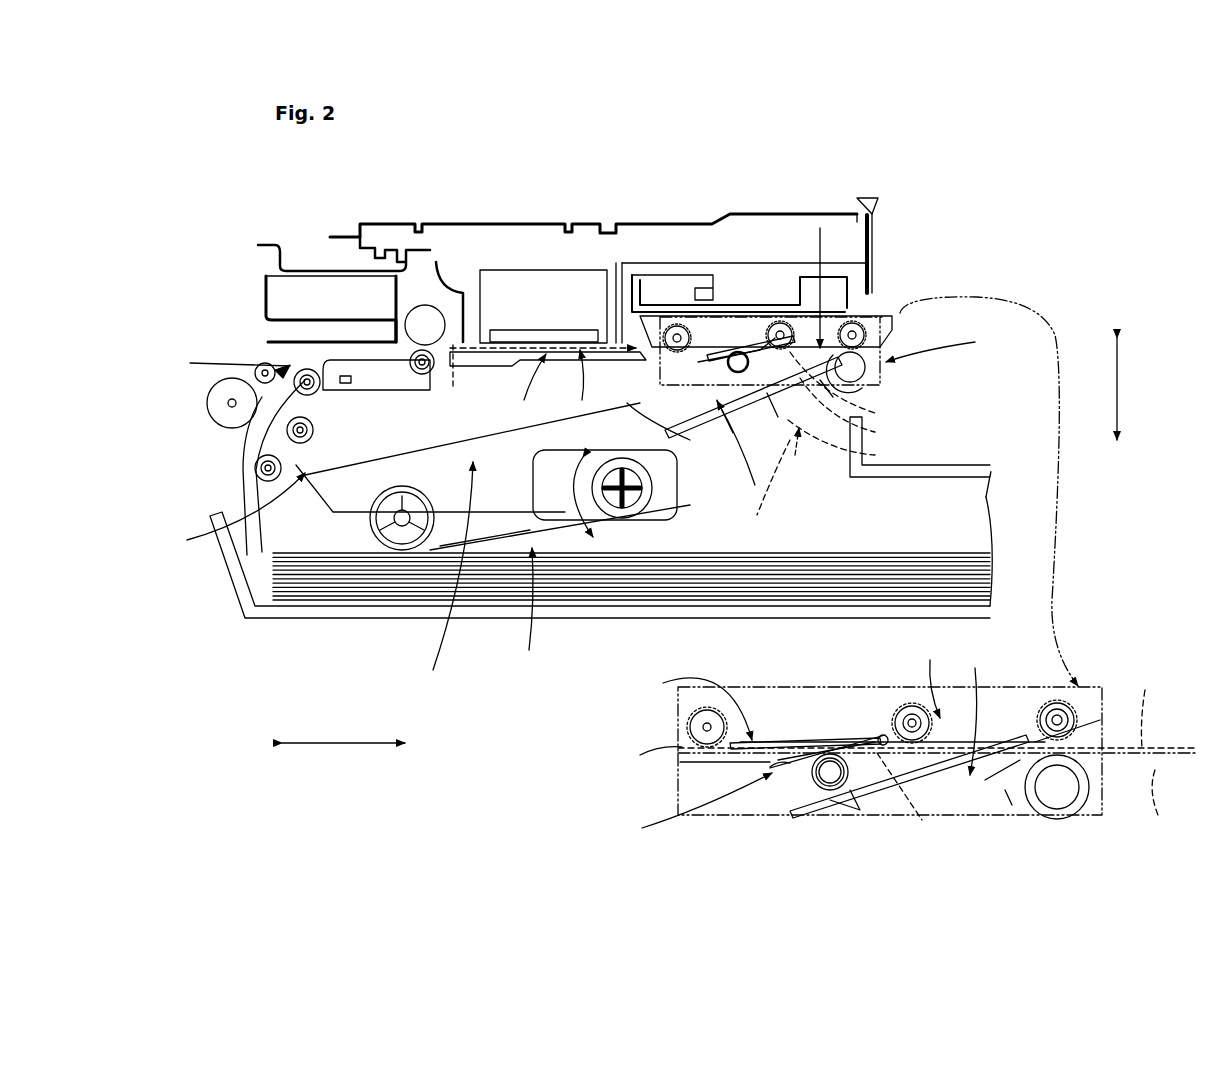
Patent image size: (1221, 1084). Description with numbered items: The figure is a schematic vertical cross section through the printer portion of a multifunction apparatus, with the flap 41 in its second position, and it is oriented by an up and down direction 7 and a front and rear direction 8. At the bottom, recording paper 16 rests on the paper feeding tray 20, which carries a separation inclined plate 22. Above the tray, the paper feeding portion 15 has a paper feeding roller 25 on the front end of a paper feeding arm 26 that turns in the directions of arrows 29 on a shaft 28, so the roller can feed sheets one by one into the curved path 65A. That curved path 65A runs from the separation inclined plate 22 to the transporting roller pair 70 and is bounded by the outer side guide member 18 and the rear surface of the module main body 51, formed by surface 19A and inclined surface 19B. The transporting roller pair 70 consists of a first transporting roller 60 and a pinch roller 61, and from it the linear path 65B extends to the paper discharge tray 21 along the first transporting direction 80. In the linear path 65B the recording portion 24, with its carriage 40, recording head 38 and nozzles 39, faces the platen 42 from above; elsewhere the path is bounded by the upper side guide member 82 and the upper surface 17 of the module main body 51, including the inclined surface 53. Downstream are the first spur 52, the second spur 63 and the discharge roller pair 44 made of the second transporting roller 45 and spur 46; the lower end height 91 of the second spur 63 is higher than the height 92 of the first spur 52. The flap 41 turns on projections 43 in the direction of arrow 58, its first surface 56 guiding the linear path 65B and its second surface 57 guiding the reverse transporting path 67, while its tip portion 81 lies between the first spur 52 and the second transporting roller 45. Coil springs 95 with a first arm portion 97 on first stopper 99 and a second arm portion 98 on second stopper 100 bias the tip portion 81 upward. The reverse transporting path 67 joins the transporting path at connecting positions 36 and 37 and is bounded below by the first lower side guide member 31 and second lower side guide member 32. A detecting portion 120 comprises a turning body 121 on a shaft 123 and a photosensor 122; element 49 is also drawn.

The up and down direction 7 is at (1120, 390).
The front and rear direction 8 is at (330, 745).
The paper feeding portion 15 is at (524, 605).
The recording paper 16 is at (835, 553).
The upper surface 17 is at (718, 240).
The outer side guide member 18 is at (246, 433).
The surface of rear end portion 19A is at (340, 433).
The inclined surface 19B is at (365, 390).
The paper feeding tray 20 is at (287, 618).
The paper discharge tray 21 is at (957, 463).
The separation inclined plate 22 is at (225, 583).
The recording portion 24 is at (494, 260).
The paper feeding roller 25 is at (390, 548).
The paper feeding arm 26 is at (487, 545).
The shaft 28 is at (662, 497).
The arrows 29 is at (578, 520).
The first lower side guide member 31 is at (786, 448).
The second lower side guide member 32 is at (330, 515).
The connecting position 36 is at (880, 240).
The connecting position 37 is at (293, 376).
The recording head 38 is at (523, 330).
The nozzles 39 is at (585, 384).
The carriage 40 is at (582, 270).
The flap 41 is at (755, 335).
The platen 42 is at (550, 354).
The projection 43 is at (840, 798).
The discharge roller pair 44 is at (941, 337).
The second transporting roller 45 is at (872, 365).
The spur 46 is at (870, 345).
The roller 49 is at (818, 790).
The module main body 51 is at (692, 582).
The first spur 52 is at (675, 325).
The inclined surface 53 is at (755, 740).
The first surface 56 is at (857, 748).
The second surface 57 is at (905, 800).
The arrow 58 is at (974, 713).
The first transporting roller 60 is at (438, 308).
The pinch roller 61 is at (422, 376).
The second spur 63 is at (790, 322).
The curved path 65A is at (300, 356).
The linear path 65B is at (619, 547).
The reverse transporting path 67 is at (462, 547).
The transporting roller pair 70 is at (396, 300).
The first transporting direction 80 is at (459, 382).
The tip portion 81 is at (820, 228).
The upper side guide member 82 is at (900, 290).
The height 91 is at (1142, 705).
The height 92 is at (1160, 800).
The coil springs 95 is at (693, 805).
The first arm portion 97 is at (810, 748).
The second arm portion 98 is at (783, 770).
The first stopper 99 is at (880, 736).
The second stopper 100 is at (782, 760).
The detecting portion 120 is at (773, 484).
The turning body 121 is at (858, 410).
The photosensor 122 is at (852, 441).
The shaft 123 is at (853, 387).